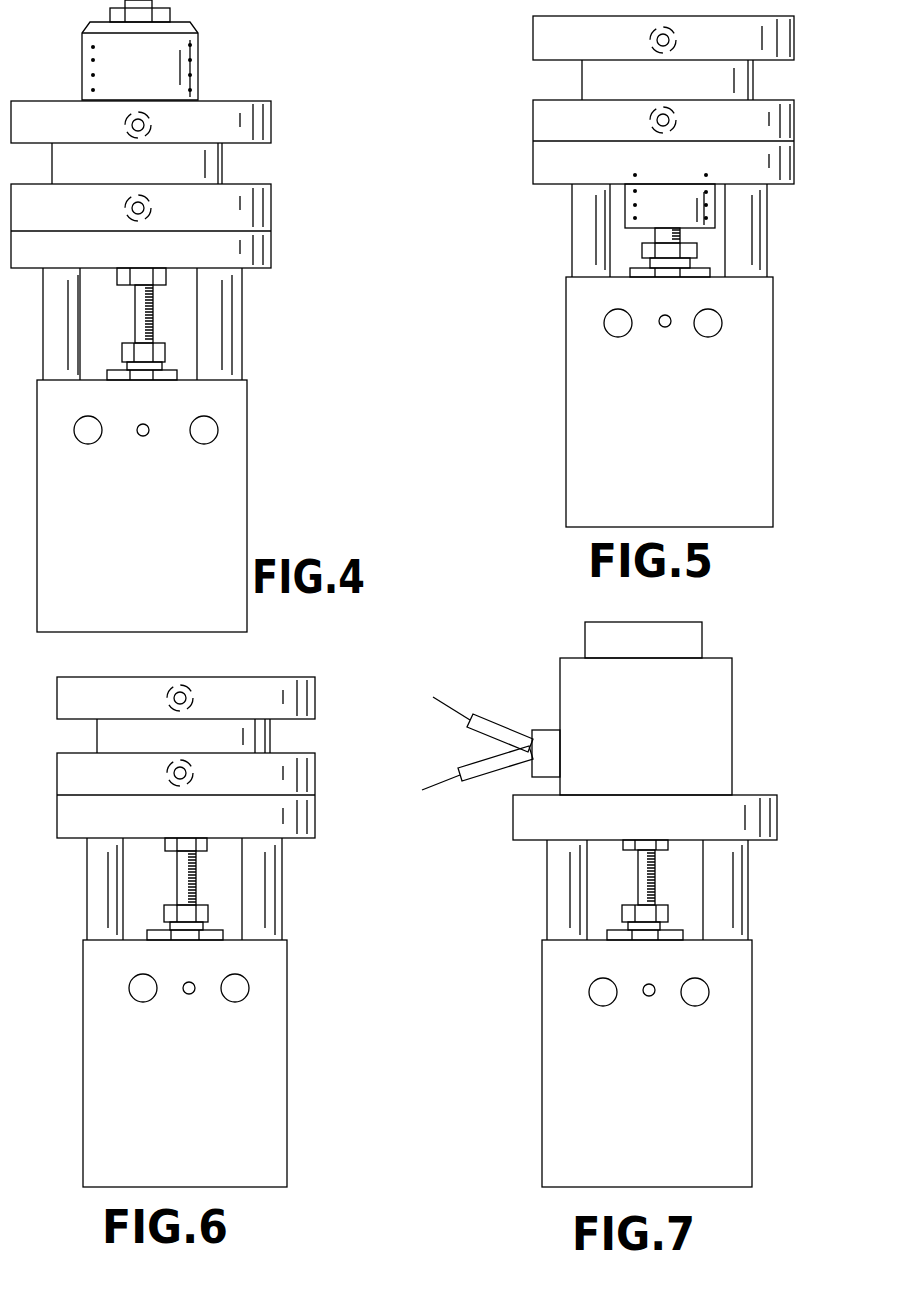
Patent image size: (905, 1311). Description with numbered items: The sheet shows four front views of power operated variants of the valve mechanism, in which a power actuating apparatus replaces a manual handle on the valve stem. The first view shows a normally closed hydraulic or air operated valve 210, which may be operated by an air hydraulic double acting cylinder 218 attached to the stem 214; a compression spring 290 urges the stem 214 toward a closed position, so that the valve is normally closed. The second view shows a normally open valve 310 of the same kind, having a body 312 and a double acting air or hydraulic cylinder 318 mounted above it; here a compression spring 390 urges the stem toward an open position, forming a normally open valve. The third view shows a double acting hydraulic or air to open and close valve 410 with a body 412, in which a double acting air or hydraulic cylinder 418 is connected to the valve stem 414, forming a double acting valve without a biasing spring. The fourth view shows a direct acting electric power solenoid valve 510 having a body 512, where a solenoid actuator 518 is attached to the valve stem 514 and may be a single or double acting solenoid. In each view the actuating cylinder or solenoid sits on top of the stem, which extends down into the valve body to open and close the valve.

In FIG. 4, the valve 210 is at (248, 499).
In FIG. 4, the stem 214 is at (155, 328).
In FIG. 4, the air hydraulic double acting cylinder 218 is at (271, 118).
In FIG. 4, the compression spring 290 is at (93, 60).
In FIG. 5, the valve 310 is at (782, 258).
In FIG. 5, the body 312 is at (585, 348).
In FIG. 5, the double acting air or hydraulic cylinder 318 is at (794, 108).
In FIG. 5, the compression spring 390 is at (635, 218).
In FIG. 6, the valve 410 is at (290, 986).
In FIG. 6, the body 412 is at (287, 1046).
In FIG. 6, the valve stem 414 is at (193, 888).
In FIG. 6, the double acting air or hydraulic cylinder 418 is at (315, 686).
In FIG. 7, the valve 510 is at (756, 1062).
In FIG. 7, the body 512 is at (748, 970).
In FIG. 7, the valve stem 514 is at (655, 890).
In FIG. 7, the solenoid actuator 518 is at (732, 748).